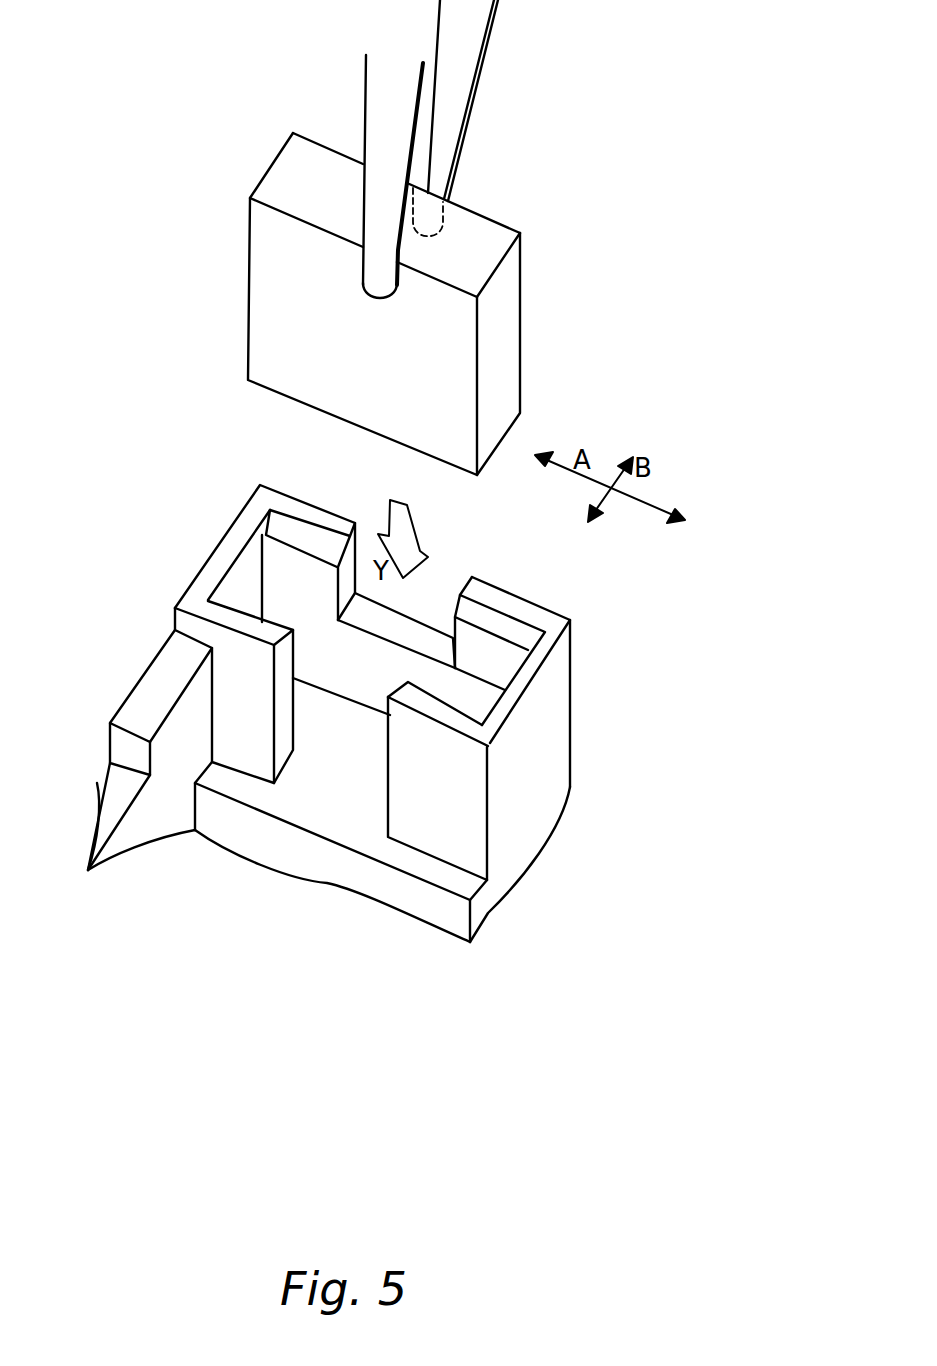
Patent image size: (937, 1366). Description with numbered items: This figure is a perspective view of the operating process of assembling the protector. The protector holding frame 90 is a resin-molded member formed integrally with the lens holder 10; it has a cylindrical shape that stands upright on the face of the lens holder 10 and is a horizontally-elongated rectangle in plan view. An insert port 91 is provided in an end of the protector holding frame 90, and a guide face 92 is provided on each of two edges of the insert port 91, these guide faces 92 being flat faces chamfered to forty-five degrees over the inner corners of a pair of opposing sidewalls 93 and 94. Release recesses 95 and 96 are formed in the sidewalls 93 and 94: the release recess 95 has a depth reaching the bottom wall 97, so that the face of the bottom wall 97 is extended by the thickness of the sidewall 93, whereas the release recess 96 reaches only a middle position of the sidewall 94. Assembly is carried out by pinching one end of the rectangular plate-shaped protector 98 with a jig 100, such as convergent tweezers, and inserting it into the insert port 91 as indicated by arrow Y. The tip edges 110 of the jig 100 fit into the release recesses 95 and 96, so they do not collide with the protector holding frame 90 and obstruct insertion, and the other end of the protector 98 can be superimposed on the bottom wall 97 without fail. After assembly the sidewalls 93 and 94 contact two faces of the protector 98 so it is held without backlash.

The lens holder 10 is at (97, 783).
The protector holding frame 90 is at (572, 700).
The insert port 91 is at (493, 655).
The guide face 92 is at (313, 540).
The sidewall 93 is at (252, 768).
The sidewall 94 is at (307, 502).
The release recess 95 is at (280, 725).
The release recess 96 is at (450, 602).
The bottom wall 97 is at (315, 713).
The protector 98 is at (522, 317).
The jig 100 is at (418, 100).
The tip edge 110 is at (441, 222).